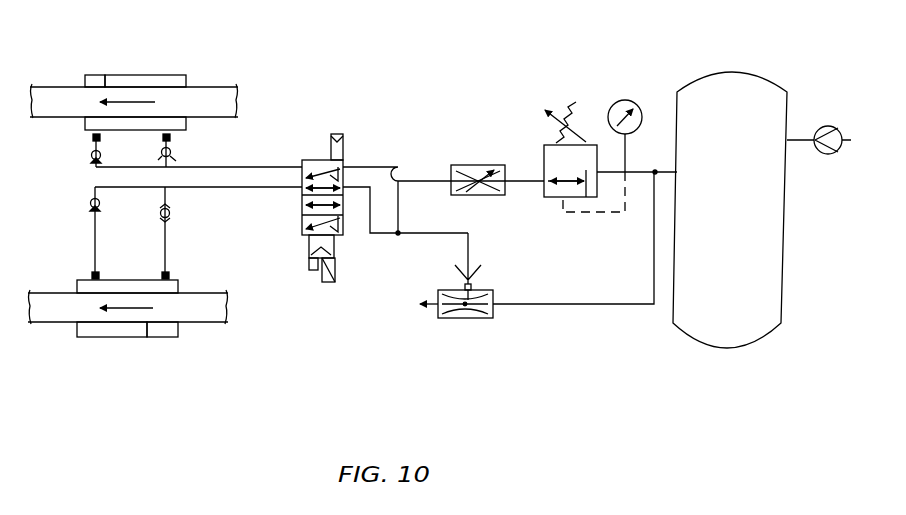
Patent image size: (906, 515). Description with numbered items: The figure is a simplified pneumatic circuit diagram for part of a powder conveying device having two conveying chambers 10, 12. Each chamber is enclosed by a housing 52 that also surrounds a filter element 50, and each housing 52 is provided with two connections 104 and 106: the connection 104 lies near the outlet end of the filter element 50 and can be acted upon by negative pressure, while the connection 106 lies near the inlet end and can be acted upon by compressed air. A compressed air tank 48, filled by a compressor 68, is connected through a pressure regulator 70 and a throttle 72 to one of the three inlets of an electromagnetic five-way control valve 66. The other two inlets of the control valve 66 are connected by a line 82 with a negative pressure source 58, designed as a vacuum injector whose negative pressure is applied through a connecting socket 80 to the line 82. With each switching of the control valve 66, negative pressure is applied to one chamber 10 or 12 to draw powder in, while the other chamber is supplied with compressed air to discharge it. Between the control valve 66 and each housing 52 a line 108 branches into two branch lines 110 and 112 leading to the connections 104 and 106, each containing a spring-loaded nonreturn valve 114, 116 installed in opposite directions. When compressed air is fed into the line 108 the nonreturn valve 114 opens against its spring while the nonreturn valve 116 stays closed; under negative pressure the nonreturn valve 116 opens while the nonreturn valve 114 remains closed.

The conveying chamber 10 is at (214, 100).
The conveying chamber 12 is at (214, 318).
The compressed air tank 48 is at (741, 213).
The filter element 50 is at (103, 75).
The housing 52 is at (148, 75).
The negative pressure source 58 is at (470, 324).
The 5-way control valve 66 is at (313, 160).
The compressor 68 is at (829, 126).
The pressure regulator 70 is at (590, 138).
The throttle 72 is at (472, 160).
The connecting socket 80 is at (472, 286).
The line 82 is at (418, 233).
The connection 104 is at (93, 137).
The connection 106 is at (170, 136).
The line 108 is at (270, 164).
The branch line 110 is at (96, 168).
The branch line 112 is at (175, 152).
The nonreturn valve 114 is at (91, 156).
The nonreturn valve 116 is at (170, 155).